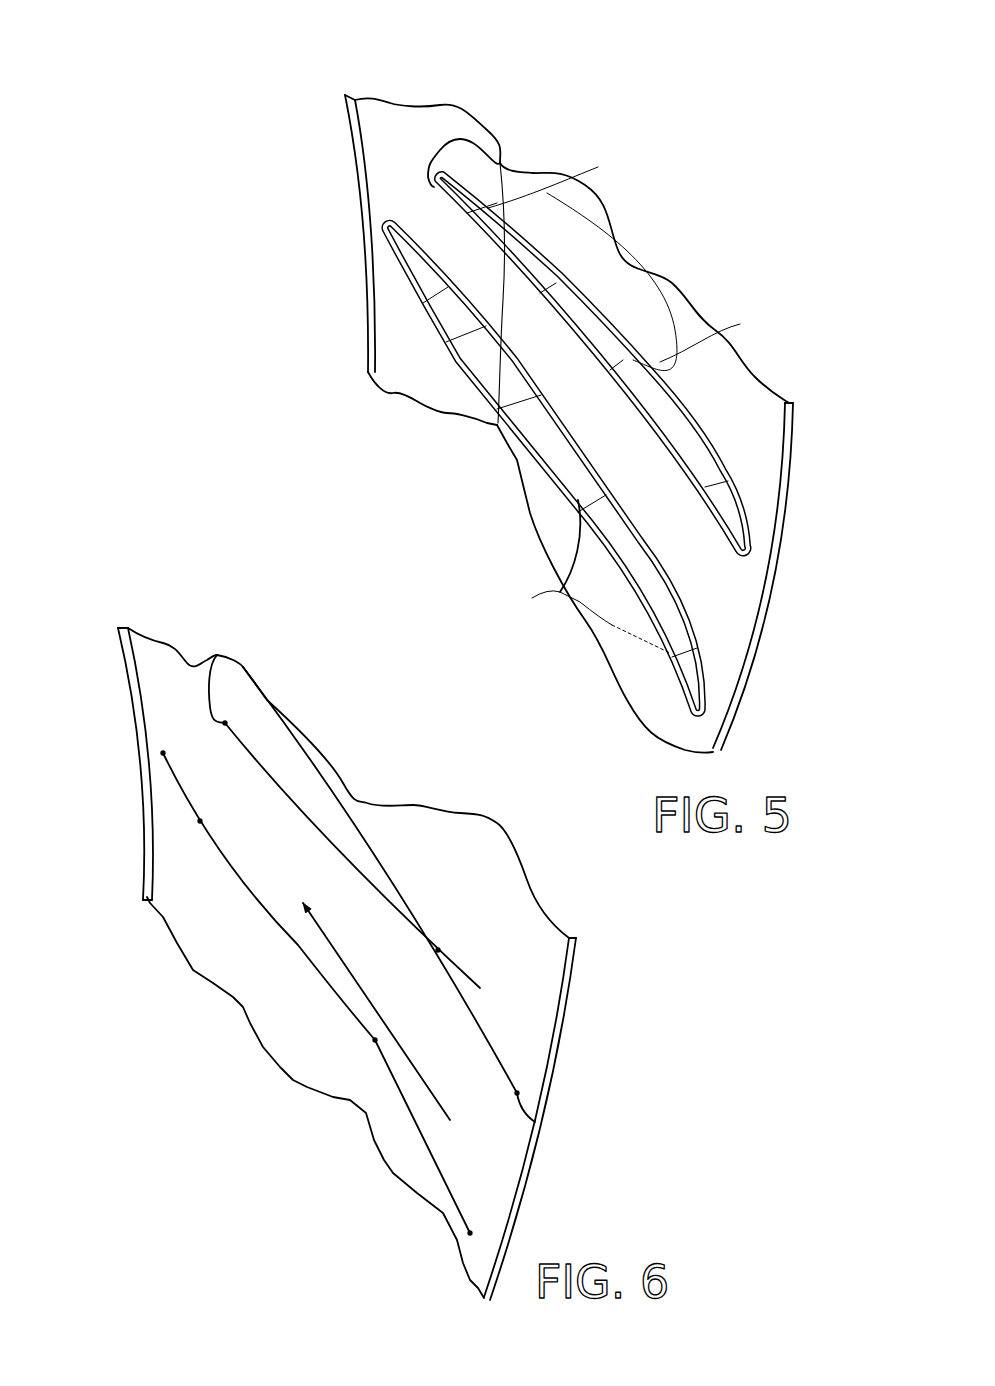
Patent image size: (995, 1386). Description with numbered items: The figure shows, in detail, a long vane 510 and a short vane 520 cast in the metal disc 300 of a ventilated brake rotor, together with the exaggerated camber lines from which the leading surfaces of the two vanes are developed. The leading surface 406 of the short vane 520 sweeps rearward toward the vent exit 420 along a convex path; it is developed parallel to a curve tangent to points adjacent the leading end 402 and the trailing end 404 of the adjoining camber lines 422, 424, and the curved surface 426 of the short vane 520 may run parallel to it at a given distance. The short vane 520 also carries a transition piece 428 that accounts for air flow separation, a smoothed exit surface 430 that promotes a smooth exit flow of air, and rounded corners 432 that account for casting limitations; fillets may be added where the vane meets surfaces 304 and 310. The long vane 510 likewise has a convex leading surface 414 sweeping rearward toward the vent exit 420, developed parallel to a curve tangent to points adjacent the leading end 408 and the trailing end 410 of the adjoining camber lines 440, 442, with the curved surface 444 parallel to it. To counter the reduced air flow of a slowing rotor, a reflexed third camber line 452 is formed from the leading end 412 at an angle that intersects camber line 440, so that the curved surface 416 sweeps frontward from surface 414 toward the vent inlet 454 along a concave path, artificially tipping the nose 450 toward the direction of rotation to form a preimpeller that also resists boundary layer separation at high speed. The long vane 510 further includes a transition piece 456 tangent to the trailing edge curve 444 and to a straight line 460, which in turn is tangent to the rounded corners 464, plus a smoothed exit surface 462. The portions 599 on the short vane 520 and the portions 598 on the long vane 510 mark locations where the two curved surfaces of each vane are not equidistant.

In FIG. 5, the metal disc 300 is at (344, 96).
In FIG. 6, the metal disc 300 is at (123, 653).
In FIG. 5, the surface 304 is at (663, 307).
In FIG. 5, the surface 310 is at (372, 335).
In FIG. 6, the leading end 402 is at (216, 660).
In FIG. 6, the trailing end 404 is at (523, 1103).
In FIG. 5, the leading surface 406 is at (762, 484).
In FIG. 6, the leading surface 406 is at (550, 1060).
In FIG. 6, the leading end 408 is at (187, 828).
In FIG. 6, the trailing end 410 is at (470, 1237).
In FIG. 6, the leading end 412 is at (152, 758).
In FIG. 5, the leading surface 414 is at (729, 652).
In FIG. 6, the leading surface 414 is at (523, 1203).
In FIG. 5, the curved surface 416 is at (690, 602).
In FIG. 6, the curved surface 416 is at (258, 693).
In FIG. 5, the vent exit 420 is at (728, 587).
In FIG. 6, the camber line 422 is at (388, 903).
In FIG. 6, the camber line 424 is at (467, 1009).
In FIG. 5, the curved surface 426 is at (627, 407).
In FIG. 5, the transition piece 428 is at (441, 211).
In FIG. 5, the exit surface 430 is at (750, 538).
In FIG. 5, the rounded corners 432 is at (447, 167).
In FIG. 6, the camber line 440 is at (298, 946).
In FIG. 6, the camber line 442 is at (397, 1102).
In FIG. 5, the curved surface 444 is at (548, 479).
In FIG. 5, the nose 450 is at (380, 222).
In FIG. 6, the third camber line 452 is at (183, 807).
In FIG. 5, the vent inlet 454 is at (385, 186).
In FIG. 5, the transition piece 456 is at (446, 352).
In FIG. 5, the straight line 460 is at (395, 263).
In FIG. 5, the exit surface 462 is at (708, 705).
In FIG. 5, the rounded corners 464 is at (380, 228).
In FIG. 5, the long vane 510 is at (380, 233).
In FIG. 5, the short vane 520 is at (433, 187).
In FIG. 5, the non-equidistant portions 598 is at (447, 427).
In FIG. 5, the non-equidistant portions 599 is at (628, 319).